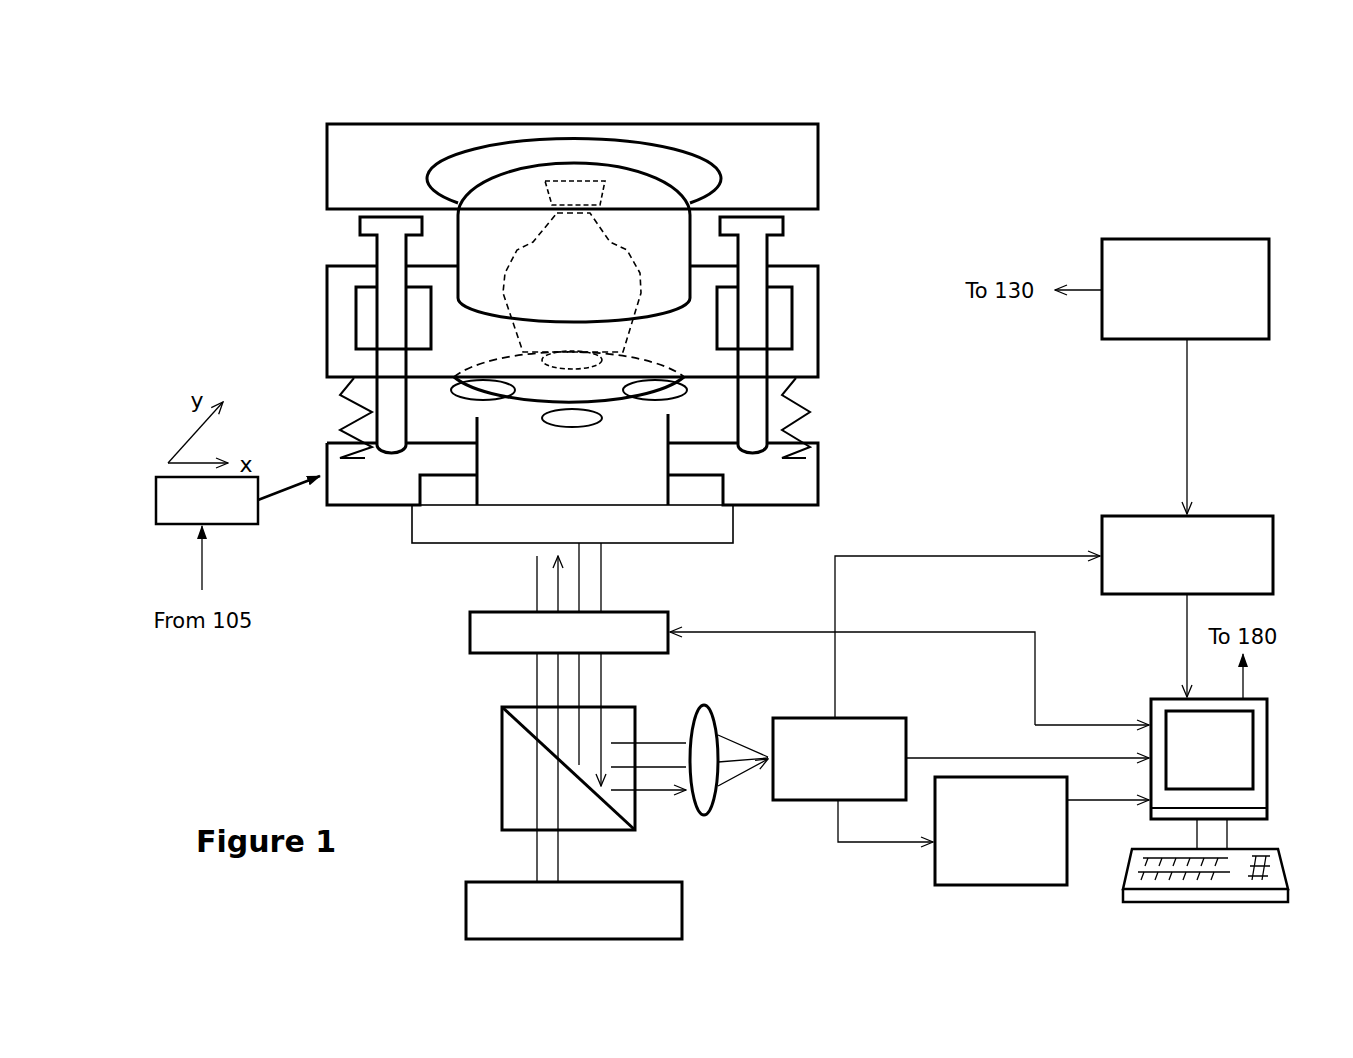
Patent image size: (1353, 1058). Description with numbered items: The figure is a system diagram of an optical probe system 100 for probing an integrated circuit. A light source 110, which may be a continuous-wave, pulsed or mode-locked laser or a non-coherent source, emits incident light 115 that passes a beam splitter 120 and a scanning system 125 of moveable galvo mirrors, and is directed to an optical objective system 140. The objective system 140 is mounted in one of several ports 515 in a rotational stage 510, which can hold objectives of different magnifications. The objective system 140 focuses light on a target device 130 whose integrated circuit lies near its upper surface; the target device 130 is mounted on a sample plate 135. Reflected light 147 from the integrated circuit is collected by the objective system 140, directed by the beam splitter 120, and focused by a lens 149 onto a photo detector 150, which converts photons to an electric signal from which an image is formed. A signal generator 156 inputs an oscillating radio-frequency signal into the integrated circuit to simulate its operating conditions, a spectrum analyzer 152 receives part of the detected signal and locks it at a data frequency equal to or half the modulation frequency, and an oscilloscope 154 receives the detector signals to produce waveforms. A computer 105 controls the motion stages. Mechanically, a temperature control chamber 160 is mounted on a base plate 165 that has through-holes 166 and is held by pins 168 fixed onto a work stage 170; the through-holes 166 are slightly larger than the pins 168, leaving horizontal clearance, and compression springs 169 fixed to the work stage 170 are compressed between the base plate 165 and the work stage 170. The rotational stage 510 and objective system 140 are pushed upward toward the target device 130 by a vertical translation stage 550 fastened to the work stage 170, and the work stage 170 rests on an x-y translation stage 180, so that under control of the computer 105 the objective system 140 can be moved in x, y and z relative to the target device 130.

The optical probe system 100 is at (1068, 163).
The computer 105 is at (1257, 746).
The light source 110 is at (574, 910).
The incident light 115 is at (534, 684).
The beam splitter 120 is at (500, 776).
The scanning system 125 is at (569, 632).
The target device 130 is at (568, 181).
The sample plate 135 is at (790, 146).
The optical objective system 140 is at (574, 257).
The reflected light 147 is at (606, 575).
The lens 149 is at (708, 736).
The photo detector 150 is at (839, 759).
The spectrum analyzer 152 is at (1001, 831).
The oscilloscope 154 is at (1187, 555).
The signal generator 156 is at (1185, 289).
The temperature control chamber 160 is at (636, 184).
The base plate 165 is at (805, 292).
The through-holes 166 is at (378, 303).
The pins 168 is at (390, 334).
The compression springs 169 is at (350, 409).
The work stage 170 is at (804, 472).
The x-y translation stage 180 is at (238, 500).
The rotational stage 510 is at (688, 404).
The ports 515 is at (628, 389).
The vertical translation stage 550 is at (572, 524).